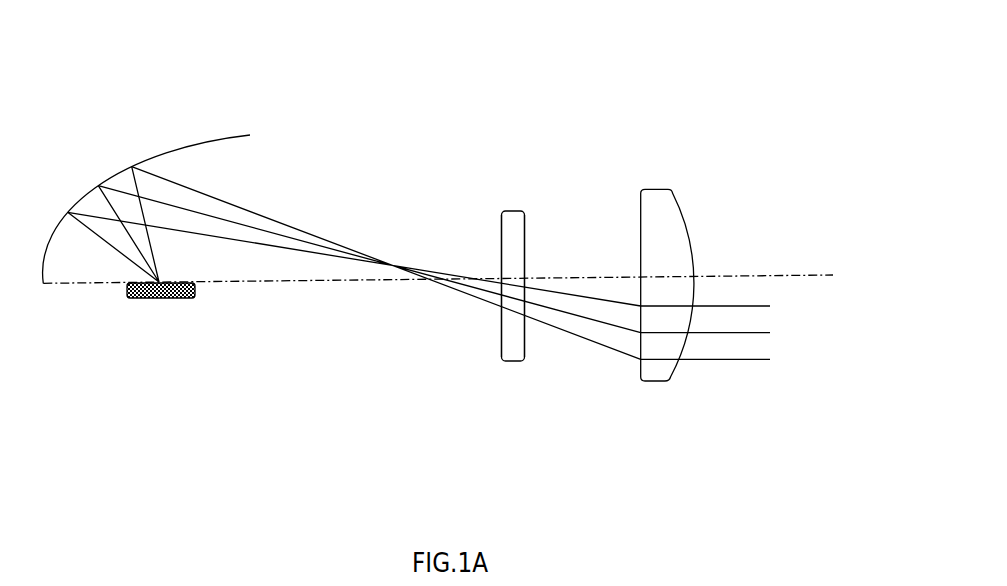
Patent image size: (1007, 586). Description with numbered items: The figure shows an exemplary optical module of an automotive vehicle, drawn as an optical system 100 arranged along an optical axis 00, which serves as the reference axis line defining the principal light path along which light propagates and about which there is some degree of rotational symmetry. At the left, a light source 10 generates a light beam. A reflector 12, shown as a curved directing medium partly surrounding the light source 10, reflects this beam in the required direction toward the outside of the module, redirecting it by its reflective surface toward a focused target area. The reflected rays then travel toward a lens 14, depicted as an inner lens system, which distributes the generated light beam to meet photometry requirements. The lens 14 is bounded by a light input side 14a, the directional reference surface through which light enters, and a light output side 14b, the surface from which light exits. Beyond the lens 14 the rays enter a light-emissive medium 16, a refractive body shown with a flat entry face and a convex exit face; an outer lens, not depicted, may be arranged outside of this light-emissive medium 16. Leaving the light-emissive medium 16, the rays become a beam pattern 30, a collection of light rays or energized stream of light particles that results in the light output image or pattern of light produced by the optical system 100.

The optical system 100 is at (519, 88).
The light source 10 is at (127, 296).
The reflector 12 is at (132, 168).
The lens 14 is at (501, 345).
The light input side 14a is at (501, 232).
The light output side 14b is at (525, 232).
The light-emissive medium 16 is at (692, 218).
The optical axis 00 is at (452, 276).
The beam pattern 30 is at (782, 302).